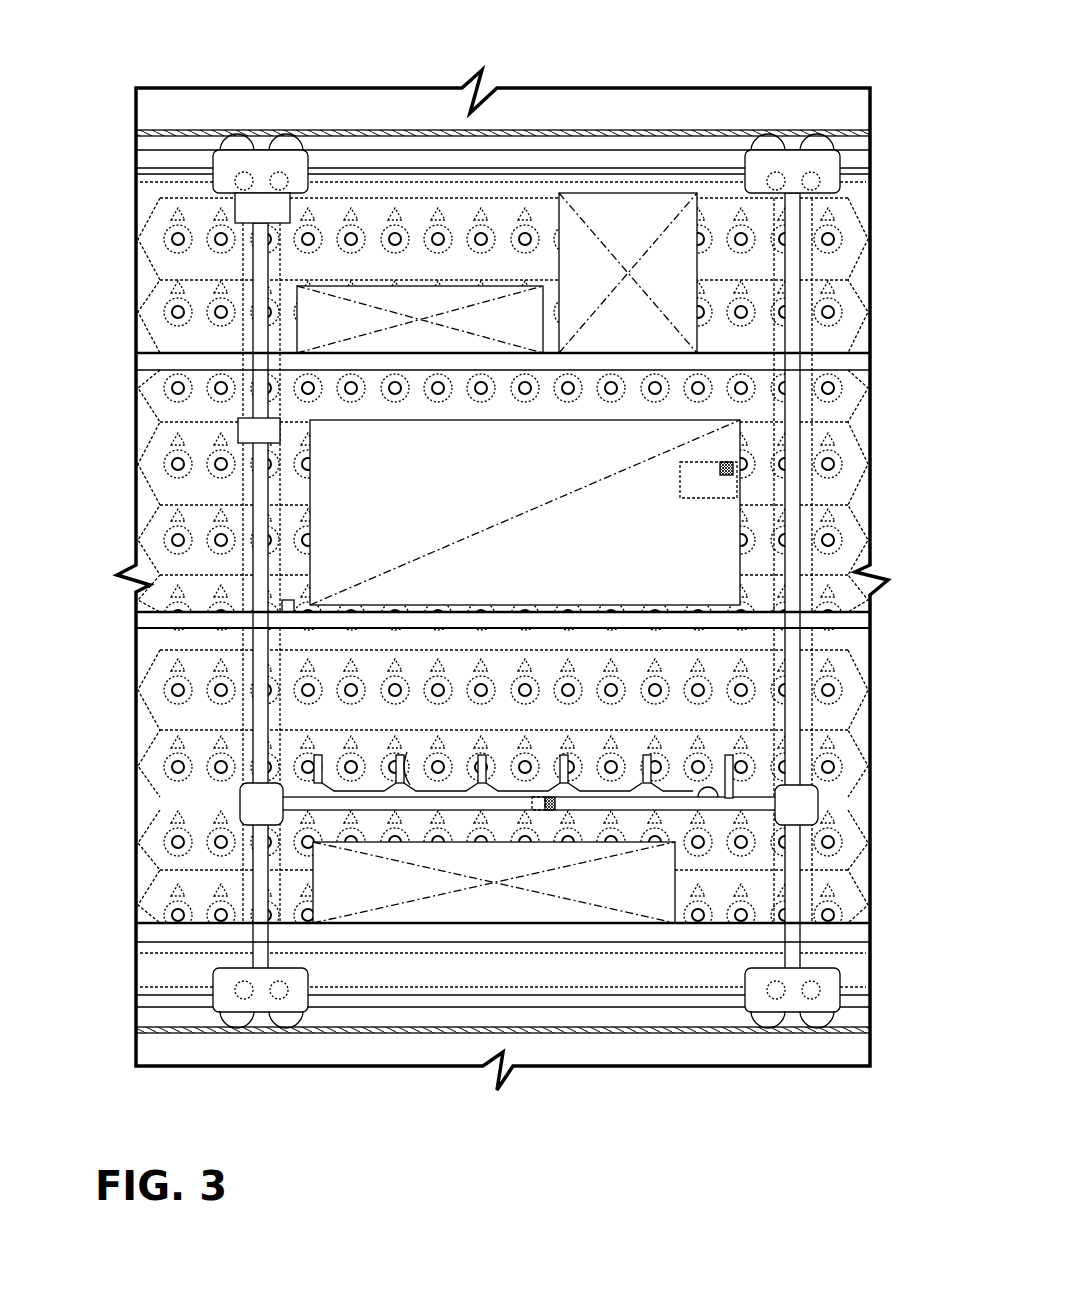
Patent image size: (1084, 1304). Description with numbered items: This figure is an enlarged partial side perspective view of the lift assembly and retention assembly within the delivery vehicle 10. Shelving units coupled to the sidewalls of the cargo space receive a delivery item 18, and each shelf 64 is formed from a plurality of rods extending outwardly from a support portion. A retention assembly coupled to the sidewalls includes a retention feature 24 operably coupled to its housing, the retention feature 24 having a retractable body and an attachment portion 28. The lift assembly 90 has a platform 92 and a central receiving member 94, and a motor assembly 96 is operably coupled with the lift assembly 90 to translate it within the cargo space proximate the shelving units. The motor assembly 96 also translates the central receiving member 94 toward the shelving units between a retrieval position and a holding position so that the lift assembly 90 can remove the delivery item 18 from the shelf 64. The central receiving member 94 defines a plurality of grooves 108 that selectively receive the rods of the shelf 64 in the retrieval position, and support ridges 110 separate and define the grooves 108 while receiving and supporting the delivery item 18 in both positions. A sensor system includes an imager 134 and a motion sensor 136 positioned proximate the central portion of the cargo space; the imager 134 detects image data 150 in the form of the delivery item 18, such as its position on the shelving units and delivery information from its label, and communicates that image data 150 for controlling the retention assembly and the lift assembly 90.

The delivery vehicle 10 is at (100, 140).
The retention feature 24 is at (606, 130).
The delivery item 18 is at (323, 330).
The image data 150 is at (728, 465).
The imager 134 is at (247, 433).
The motion sensor 136 is at (288, 612).
The shelf 64 is at (832, 622).
The attachment portion 28 is at (790, 757).
The central receiving member 94 is at (318, 782).
The support ridges 110 is at (407, 752).
The lift assembly 90 is at (457, 798).
The motor assembly 96 is at (555, 806).
The platform 92 is at (672, 842).
The grooves 108 is at (717, 800).